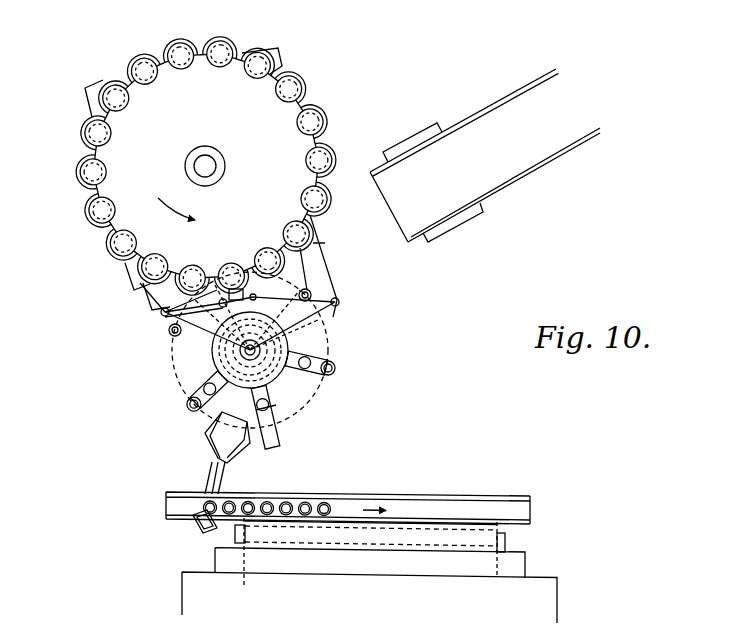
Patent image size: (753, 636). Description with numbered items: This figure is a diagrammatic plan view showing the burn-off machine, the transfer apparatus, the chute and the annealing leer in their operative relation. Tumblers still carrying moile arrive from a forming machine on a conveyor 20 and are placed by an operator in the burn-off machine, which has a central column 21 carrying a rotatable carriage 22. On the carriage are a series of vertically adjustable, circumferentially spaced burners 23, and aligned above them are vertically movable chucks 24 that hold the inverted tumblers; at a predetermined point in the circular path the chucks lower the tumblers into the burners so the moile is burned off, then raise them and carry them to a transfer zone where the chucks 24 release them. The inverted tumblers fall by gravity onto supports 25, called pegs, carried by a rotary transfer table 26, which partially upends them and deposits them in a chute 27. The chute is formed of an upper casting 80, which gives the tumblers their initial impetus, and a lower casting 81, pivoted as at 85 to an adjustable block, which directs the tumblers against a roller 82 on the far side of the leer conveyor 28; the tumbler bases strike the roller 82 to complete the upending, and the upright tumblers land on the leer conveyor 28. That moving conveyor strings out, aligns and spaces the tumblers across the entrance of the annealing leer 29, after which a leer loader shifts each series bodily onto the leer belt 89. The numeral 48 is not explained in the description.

The conveyor 20 is at (548, 160).
The central column 21 is at (207, 168).
The rotatable carriage 22 is at (122, 190).
The burners 23 is at (230, 42).
The chucks 24 is at (287, 84).
The supports 25 is at (334, 367).
The rotary transfer table 26 is at (284, 403).
The chute 27 is at (246, 456).
The leer conveyor 28 is at (342, 507).
The annealing leer 29 is at (538, 607).
The transfer arm 48 is at (207, 380).
The upper casting 80 is at (212, 452).
The lower casting 81 is at (210, 477).
The roller 82 is at (197, 523).
The pivot 85 is at (517, 567).
The leer belt 89 is at (497, 580).